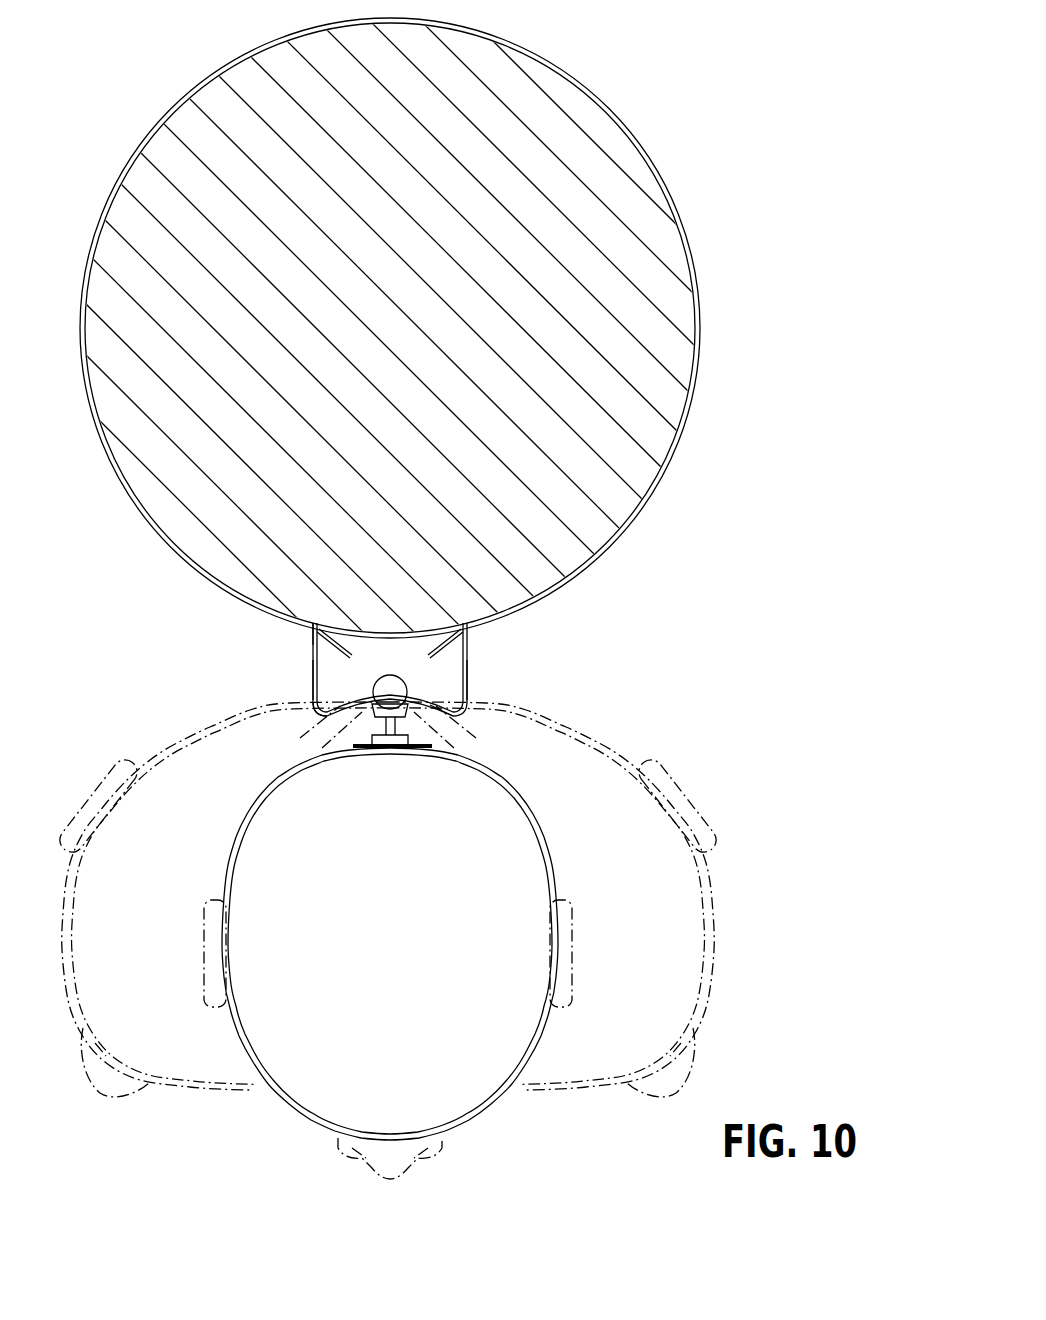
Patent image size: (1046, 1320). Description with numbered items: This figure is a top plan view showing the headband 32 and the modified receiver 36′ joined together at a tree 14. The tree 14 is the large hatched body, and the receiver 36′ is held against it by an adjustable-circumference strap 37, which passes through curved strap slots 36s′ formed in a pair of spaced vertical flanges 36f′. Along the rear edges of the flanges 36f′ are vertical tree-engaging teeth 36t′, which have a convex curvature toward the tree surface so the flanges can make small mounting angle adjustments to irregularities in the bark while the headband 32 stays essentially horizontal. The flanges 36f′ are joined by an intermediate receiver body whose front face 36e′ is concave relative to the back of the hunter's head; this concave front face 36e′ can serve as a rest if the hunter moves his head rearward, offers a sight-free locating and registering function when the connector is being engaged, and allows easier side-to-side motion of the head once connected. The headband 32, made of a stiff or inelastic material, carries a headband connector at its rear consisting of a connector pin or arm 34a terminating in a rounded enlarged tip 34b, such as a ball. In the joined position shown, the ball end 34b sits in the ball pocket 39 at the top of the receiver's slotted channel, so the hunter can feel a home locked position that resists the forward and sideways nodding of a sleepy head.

The tree 14 is at (605, 190).
The adjustable-circumference strap 37 is at (703, 336).
The headband 32 is at (535, 834).
The connector pin or arm 34a is at (352, 745).
The rounded enlarged tip 34b is at (390, 690).
The modified receiver 36′ is at (495, 648).
The tree-engaging teeth 36t′ is at (313, 622).
The strap slots 36s′ is at (312, 626).
The vertical flanges 36f′ is at (312, 688).
The concave front face 36e′ is at (445, 737).
The ball pocket 39 is at (324, 712).